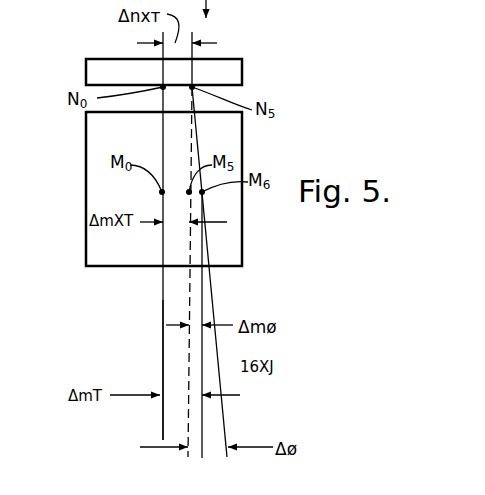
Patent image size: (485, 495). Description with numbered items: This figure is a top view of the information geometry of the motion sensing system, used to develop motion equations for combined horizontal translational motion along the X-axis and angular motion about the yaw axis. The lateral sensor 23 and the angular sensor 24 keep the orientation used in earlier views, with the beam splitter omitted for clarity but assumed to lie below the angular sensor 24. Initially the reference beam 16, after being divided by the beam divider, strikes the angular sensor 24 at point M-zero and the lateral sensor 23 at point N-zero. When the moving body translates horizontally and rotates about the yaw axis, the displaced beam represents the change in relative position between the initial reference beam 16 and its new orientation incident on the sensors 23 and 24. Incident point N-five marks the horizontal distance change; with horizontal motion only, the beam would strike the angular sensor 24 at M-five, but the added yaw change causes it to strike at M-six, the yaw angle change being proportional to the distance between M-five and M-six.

The lateral sensor 23 is at (242, 74).
The angular sensor 24 is at (86, 252).
The reference beam 16 is at (135, 370).